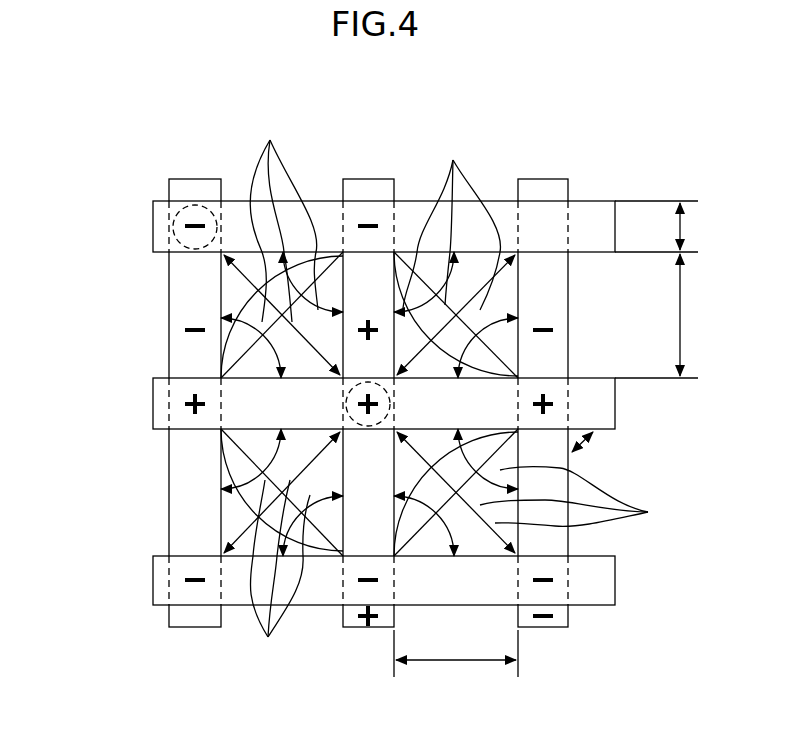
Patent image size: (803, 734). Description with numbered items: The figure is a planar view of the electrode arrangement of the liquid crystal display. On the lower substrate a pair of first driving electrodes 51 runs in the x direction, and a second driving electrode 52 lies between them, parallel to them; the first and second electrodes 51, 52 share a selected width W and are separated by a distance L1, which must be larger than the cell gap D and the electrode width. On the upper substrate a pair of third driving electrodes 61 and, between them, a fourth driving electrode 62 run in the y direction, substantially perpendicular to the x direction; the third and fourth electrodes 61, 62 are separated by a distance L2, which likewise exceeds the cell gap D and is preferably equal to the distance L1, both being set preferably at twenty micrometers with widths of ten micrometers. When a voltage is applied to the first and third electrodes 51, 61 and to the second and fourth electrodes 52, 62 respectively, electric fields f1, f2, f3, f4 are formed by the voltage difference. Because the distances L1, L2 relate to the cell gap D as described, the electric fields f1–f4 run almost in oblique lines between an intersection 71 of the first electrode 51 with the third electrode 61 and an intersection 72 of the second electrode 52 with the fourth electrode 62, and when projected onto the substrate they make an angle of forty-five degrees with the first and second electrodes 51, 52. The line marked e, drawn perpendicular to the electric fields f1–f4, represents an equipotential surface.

The first driving electrodes 51 is at (193, 192).
The second driving electrode 52 is at (368, 192).
The third driving electrodes 61 is at (160, 230).
The fourth driving electrode 62 is at (165, 404).
The intersection 71 is at (175, 208).
The intersection 72 is at (392, 400).
The electric field f1 is at (284, 216).
The electric field f2 is at (451, 218).
The electric field f3 is at (280, 578).
The electric field f4 is at (564, 496).
The equipotential surface e is at (230, 322).
The electrode width W is at (668, 226).
The distance between first and second electrodes L1 is at (456, 651).
The distance between third and fourth electrodes L2 is at (672, 316).
The cell gap D is at (591, 453).